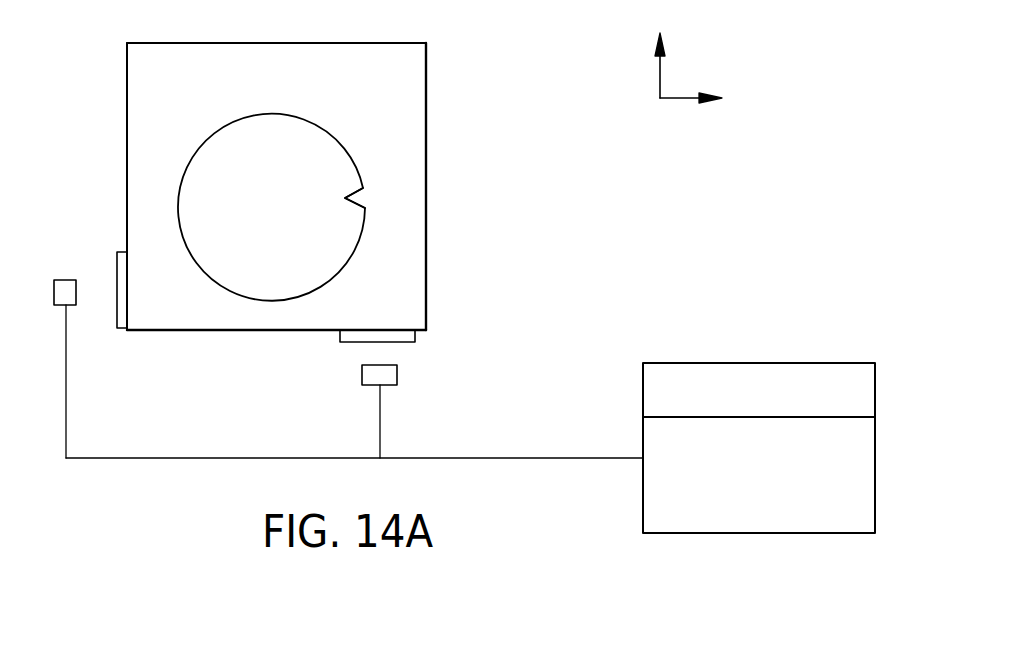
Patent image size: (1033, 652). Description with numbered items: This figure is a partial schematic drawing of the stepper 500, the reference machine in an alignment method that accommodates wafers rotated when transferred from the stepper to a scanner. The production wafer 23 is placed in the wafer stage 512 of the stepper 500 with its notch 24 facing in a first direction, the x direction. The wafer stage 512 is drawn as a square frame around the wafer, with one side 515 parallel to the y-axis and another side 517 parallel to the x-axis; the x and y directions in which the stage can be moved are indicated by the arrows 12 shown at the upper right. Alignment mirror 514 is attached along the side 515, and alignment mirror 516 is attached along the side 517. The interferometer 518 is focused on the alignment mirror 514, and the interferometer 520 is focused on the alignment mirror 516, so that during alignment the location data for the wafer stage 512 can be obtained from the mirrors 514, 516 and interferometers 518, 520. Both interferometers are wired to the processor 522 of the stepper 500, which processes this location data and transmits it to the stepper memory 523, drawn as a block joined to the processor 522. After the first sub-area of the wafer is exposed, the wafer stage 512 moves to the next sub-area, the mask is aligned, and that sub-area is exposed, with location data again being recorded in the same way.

The stepper 500 is at (458, 69).
The wafer stage 512 is at (427, 282).
The side parallel to the y-axis 515 is at (127, 135).
The production wafer 23 is at (357, 155).
The notch 24 is at (368, 205).
The alignment mirror 514 is at (116, 322).
The side parallel to the x-axis 517 is at (265, 335).
The alignment mirror 516 is at (345, 345).
The interferometer 518 is at (60, 279).
The interferometer 520 is at (398, 375).
The stepper memory 523 is at (643, 388).
The processor 522 is at (643, 490).
The arrows 12 is at (680, 100).